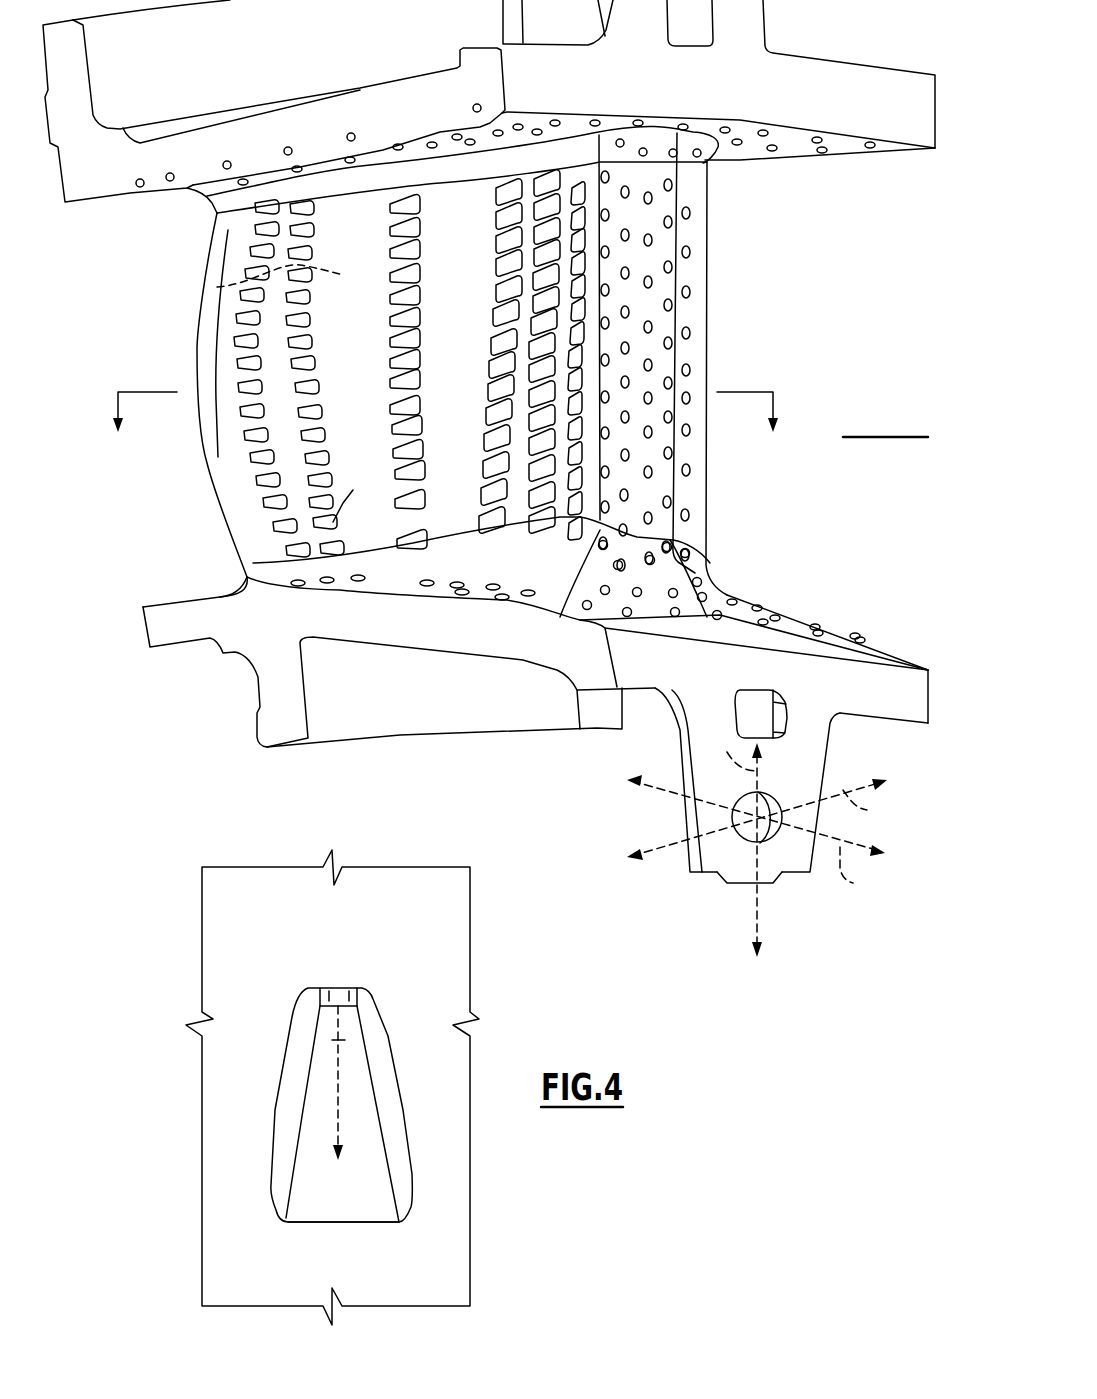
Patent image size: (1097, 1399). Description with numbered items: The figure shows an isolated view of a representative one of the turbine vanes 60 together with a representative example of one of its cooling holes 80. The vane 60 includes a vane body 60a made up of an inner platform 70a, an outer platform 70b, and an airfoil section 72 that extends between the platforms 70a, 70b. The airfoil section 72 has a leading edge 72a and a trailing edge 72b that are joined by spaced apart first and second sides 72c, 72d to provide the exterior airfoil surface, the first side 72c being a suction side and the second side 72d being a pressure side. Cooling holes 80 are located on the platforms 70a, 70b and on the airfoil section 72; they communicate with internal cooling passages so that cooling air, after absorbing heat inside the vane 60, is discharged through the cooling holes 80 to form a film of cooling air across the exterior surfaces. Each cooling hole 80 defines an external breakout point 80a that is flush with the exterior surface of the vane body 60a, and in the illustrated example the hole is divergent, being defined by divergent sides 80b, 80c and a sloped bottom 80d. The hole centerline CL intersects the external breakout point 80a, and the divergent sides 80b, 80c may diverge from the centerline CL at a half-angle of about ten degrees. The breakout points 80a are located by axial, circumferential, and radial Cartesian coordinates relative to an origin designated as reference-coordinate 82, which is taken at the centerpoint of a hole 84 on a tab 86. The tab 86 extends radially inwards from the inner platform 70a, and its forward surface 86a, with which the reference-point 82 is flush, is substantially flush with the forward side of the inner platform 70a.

In FIG. 3, the vane 60 is at (175, 725).
In FIG. 3, the vane body 60a is at (768, 593).
In FIG. 4, the vane body 60a is at (448, 939).
In FIG. 3, the inner platform 70a is at (595, 673).
In FIG. 3, the outer platform 70b is at (885, 113).
In FIG. 3, the airfoil section 72 is at (713, 310).
In FIG. 3, the leading edge 72a is at (688, 413).
In FIG. 3, the trailing edge 72b is at (207, 472).
In FIG. 3, the first side 72c is at (217, 287).
In FIG. 3, the second side 72d is at (333, 522).
In FIG. 3, the cooling holes 80 is at (650, 240).
In FIG. 4, the cooling holes 80 is at (366, 1141).
In FIG. 4, the external breakout point 80a is at (344, 1034).
In FIG. 4, the divergent side 80b is at (288, 1179).
In FIG. 4, the divergent side 80c is at (388, 1170).
In FIG. 4, the sloped bottom 80d is at (351, 1151).
In FIG. 3, the reference-coordinate 82 is at (767, 797).
In FIG. 3, the hole 84 is at (768, 838).
In FIG. 3, the tab 86 is at (680, 768).
In FIG. 3, the forward surface 86a is at (718, 867).
In FIG. 4, the hole centerline CL is at (341, 1096).